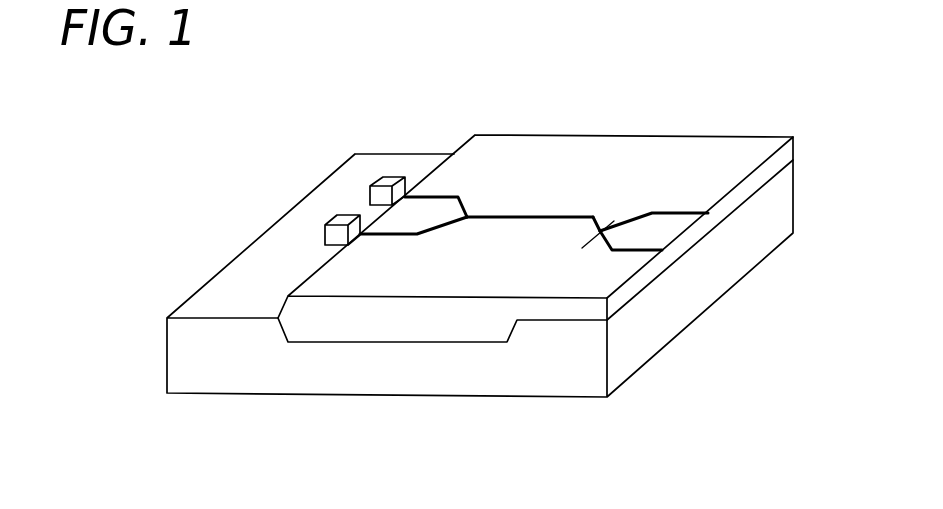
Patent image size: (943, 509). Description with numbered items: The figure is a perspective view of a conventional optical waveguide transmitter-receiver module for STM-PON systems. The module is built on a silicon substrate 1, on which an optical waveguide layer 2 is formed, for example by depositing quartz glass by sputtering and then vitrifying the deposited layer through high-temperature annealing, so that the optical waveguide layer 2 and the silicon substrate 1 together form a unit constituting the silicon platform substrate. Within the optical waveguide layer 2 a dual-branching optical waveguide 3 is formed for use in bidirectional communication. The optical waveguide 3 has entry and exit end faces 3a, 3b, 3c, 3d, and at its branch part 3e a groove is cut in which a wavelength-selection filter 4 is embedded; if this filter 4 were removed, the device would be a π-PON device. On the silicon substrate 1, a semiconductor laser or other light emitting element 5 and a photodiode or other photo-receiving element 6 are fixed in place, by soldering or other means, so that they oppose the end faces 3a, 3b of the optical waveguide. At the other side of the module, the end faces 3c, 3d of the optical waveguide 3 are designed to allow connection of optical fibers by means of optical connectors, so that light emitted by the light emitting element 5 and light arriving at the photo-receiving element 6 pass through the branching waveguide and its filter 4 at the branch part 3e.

The silicon substrate 1 is at (203, 380).
The optical waveguide layer 2 is at (493, 145).
The optical waveguide 3 is at (528, 217).
The end face 3a is at (358, 236).
The end face 3b is at (407, 195).
The end face 3c is at (662, 250).
The end face 3d is at (708, 213).
The branch part 3e is at (600, 230).
The wavelength-selection filter 4 is at (614, 220).
The light emitting element 5 is at (338, 217).
The photo-receiving element 6 is at (387, 182).